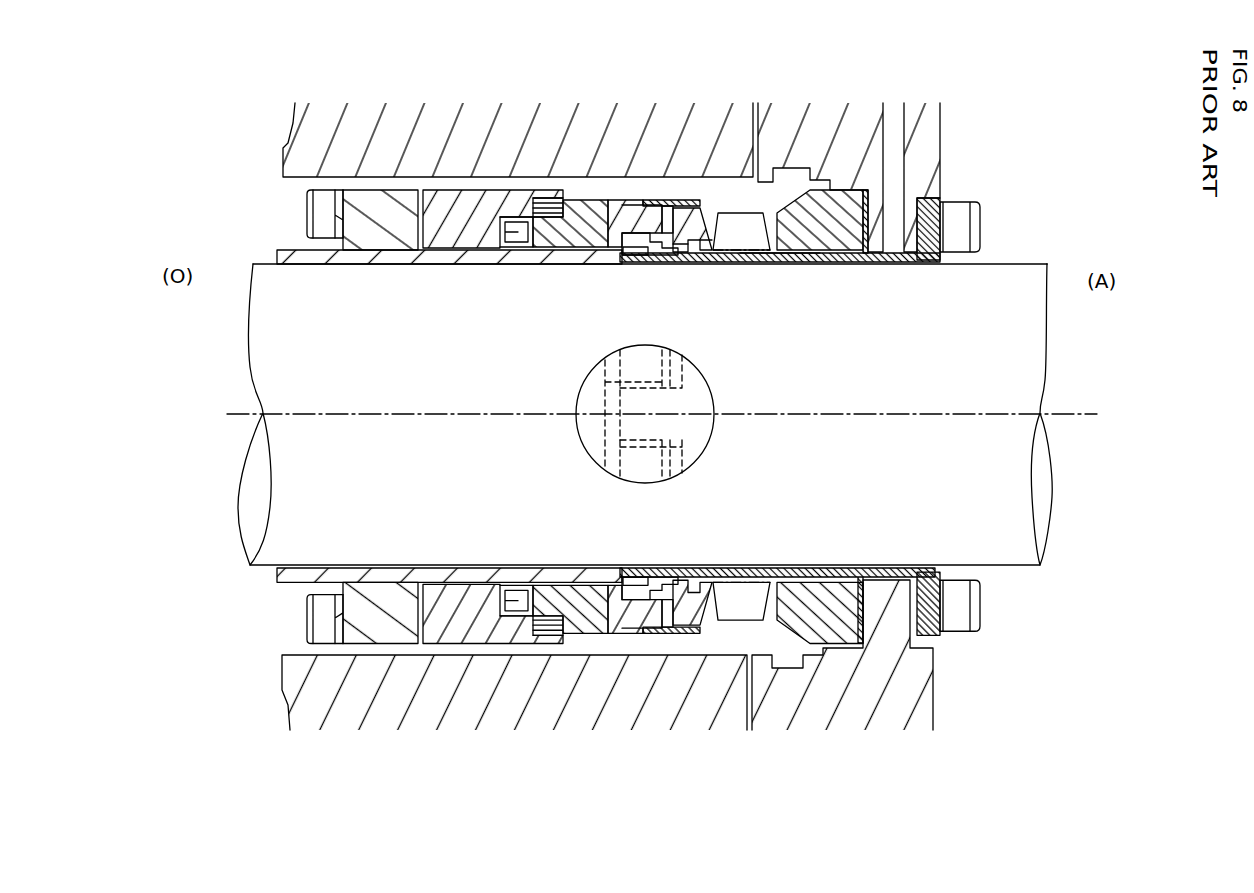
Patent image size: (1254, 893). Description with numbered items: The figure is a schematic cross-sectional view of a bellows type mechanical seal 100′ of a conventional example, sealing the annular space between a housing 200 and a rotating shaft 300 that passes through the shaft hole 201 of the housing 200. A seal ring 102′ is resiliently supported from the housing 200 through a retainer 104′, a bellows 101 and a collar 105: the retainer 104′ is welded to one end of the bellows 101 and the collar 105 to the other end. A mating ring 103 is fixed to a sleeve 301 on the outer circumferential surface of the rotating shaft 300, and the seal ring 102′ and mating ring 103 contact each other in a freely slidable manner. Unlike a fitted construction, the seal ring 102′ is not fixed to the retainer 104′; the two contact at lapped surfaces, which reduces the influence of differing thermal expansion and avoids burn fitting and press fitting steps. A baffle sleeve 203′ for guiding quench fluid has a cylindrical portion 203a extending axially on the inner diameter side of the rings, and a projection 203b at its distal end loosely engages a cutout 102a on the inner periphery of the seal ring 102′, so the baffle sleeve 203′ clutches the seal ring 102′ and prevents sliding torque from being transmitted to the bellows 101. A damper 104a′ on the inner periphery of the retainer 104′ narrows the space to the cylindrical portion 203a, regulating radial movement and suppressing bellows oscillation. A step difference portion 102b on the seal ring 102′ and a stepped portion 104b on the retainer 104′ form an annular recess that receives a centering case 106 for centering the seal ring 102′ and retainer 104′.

The mechanical seal 100′ is at (1047, 243).
The bellows 101 is at (740, 212).
The seal ring 102′ is at (626, 204).
The cutout 102a is at (607, 253).
The step difference portion 102b is at (660, 199).
The mating ring 103 is at (584, 199).
The retainer 104′ is at (690, 209).
The damper 104a′ is at (717, 258).
The stepped portion 104b is at (677, 258).
The collar 105 is at (852, 191).
The centering case 106 is at (675, 205).
The housing 200 is at (278, 145).
The shaft hole 201 is at (251, 224).
The baffle sleeve 203′ is at (923, 259).
The cylindrical portion 203a is at (778, 261).
The projection 203b is at (648, 258).
The rotating shaft 300 is at (250, 364).
The sleeve 301 is at (388, 252).